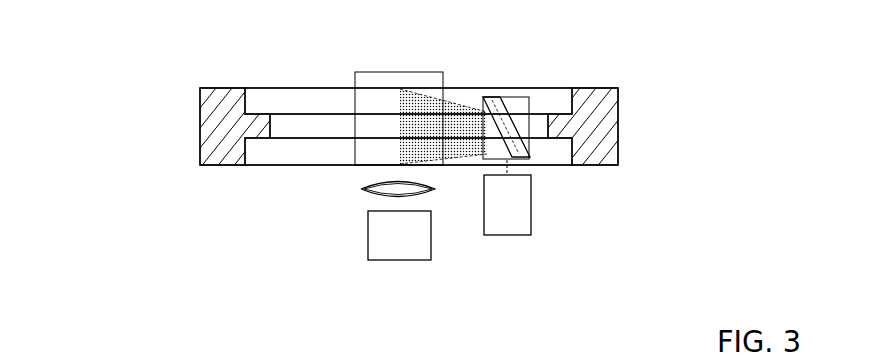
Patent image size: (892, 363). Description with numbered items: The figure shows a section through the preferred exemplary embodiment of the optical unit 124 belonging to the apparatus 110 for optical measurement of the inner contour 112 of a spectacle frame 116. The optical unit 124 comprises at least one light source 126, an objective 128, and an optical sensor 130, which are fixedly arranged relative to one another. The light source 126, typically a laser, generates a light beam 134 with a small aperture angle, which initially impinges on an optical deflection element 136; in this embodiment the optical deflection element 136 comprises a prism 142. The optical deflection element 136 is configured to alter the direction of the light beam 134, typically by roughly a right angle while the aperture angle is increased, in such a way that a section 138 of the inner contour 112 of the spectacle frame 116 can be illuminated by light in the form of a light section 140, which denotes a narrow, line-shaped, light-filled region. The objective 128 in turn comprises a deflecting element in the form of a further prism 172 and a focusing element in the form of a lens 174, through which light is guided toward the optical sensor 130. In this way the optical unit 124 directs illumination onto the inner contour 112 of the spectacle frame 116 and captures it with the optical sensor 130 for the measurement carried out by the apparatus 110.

The apparatus 110 is at (418, 111).
The inner contour 112 is at (295, 99).
The spectacle frame 116 is at (189, 126).
The optical unit 124 is at (567, 246).
The light source 126 is at (503, 228).
The objective 128 is at (358, 257).
The optical sensor 130 is at (396, 243).
The light beam 134 is at (475, 99).
The optical deflection element 136 is at (572, 148).
The section 138 is at (418, 90).
The light section 140 is at (463, 104).
The prism 142 is at (528, 155).
The further prism 172 is at (365, 156).
The lens 174 is at (368, 193).